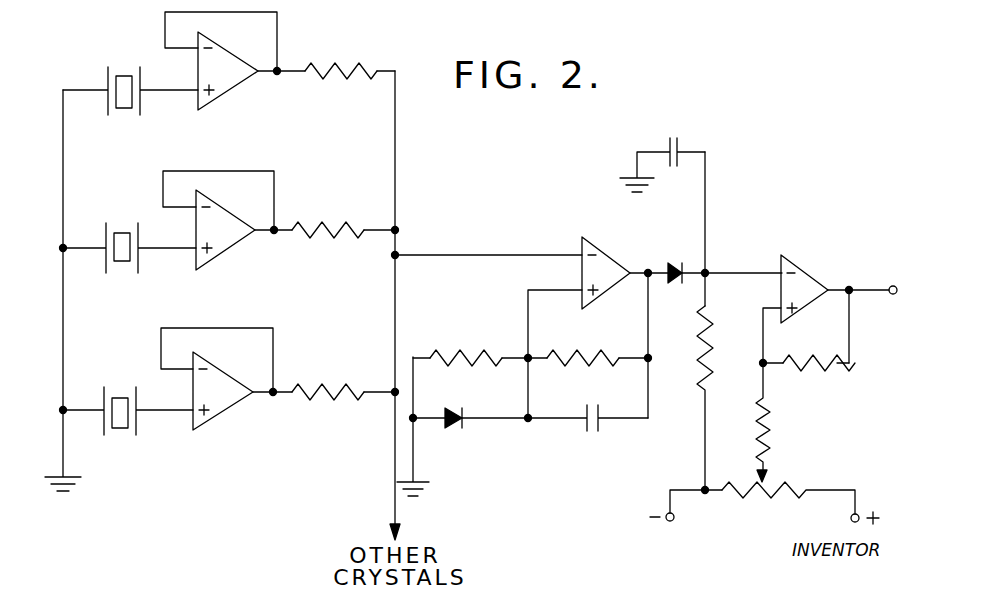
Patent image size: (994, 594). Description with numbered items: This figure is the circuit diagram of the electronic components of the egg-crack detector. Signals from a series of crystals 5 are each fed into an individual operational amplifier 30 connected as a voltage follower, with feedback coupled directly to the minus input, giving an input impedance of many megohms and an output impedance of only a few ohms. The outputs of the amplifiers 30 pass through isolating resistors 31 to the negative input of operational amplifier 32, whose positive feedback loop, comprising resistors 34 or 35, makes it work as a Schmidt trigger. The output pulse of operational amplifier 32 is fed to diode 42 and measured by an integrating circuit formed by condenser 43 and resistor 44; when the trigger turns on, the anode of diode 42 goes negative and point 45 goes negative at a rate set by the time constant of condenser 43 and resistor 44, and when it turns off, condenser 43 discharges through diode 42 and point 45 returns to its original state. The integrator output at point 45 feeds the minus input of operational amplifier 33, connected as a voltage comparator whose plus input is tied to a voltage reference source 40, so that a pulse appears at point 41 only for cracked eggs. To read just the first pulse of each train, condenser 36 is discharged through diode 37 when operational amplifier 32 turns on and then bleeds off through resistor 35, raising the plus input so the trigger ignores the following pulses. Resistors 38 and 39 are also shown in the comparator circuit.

The crystal 5 is at (126, 70).
The operational amplifier 30 is at (236, 78).
The isolating resistor 31 is at (357, 80).
The operational amplifier 32 is at (603, 250).
The operational amplifier 33 is at (805, 266).
The resistor 34 is at (590, 353).
The resistor 35 is at (465, 352).
The condenser 36 is at (598, 432).
The diode 37 is at (455, 428).
The feedback resistor 38 is at (815, 372).
The resistor 39 is at (770, 427).
The voltage reference source 40 is at (770, 500).
The point 41 is at (893, 298).
The diode 42 is at (676, 265).
The condenser 43 is at (680, 136).
The resistor 44 is at (700, 335).
The point 45 is at (722, 268).